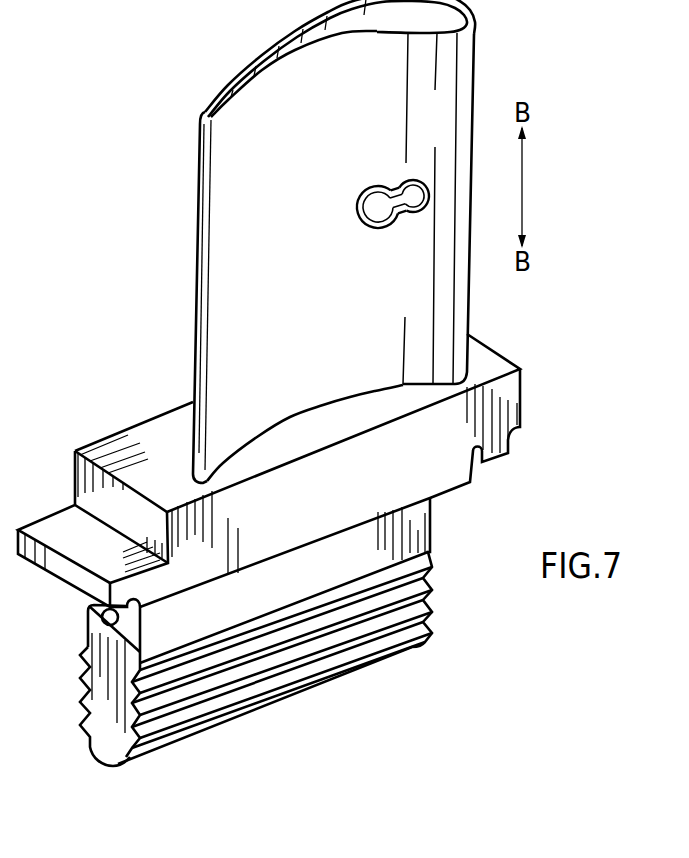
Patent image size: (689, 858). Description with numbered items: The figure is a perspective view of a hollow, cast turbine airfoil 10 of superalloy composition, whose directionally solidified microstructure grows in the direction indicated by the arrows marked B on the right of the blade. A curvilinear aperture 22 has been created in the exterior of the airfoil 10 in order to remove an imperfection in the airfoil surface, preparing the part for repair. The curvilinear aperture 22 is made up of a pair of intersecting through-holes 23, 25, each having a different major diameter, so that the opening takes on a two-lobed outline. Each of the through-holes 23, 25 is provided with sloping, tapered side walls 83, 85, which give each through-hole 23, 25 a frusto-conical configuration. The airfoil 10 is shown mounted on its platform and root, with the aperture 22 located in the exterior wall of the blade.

The turbine blade 10 is at (197, 226).
The opening in blade wall 22 is at (369, 228).
The inner wall of opening 23 is at (363, 204).
The second lobe region 25 is at (415, 212).
The first lobe of opening 83 is at (376, 186).
The second lobe of opening 85 is at (416, 181).